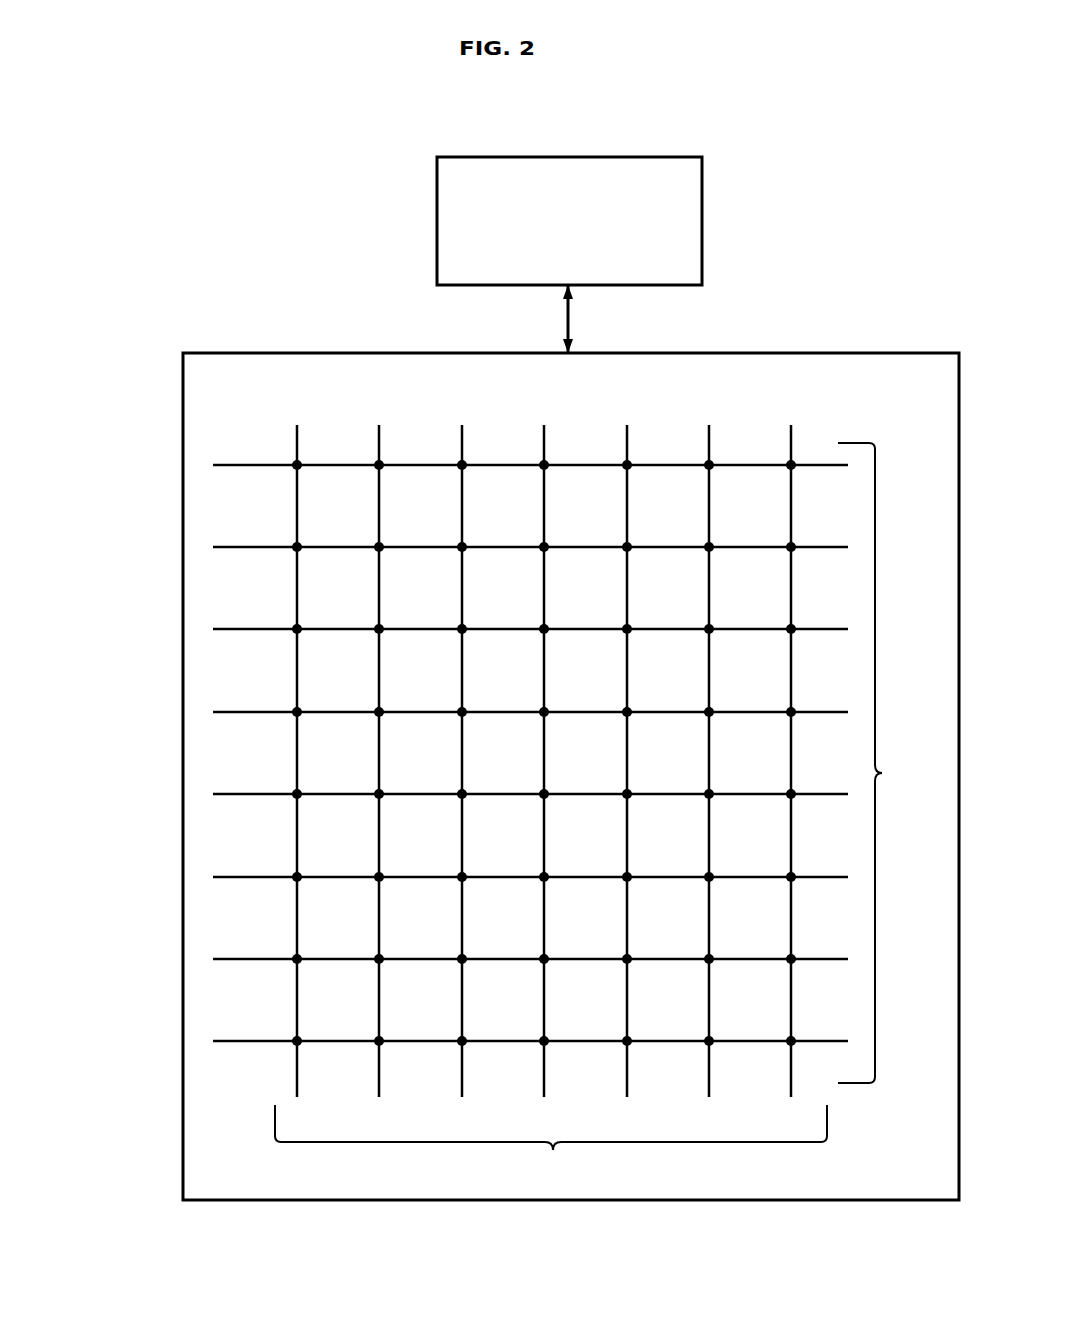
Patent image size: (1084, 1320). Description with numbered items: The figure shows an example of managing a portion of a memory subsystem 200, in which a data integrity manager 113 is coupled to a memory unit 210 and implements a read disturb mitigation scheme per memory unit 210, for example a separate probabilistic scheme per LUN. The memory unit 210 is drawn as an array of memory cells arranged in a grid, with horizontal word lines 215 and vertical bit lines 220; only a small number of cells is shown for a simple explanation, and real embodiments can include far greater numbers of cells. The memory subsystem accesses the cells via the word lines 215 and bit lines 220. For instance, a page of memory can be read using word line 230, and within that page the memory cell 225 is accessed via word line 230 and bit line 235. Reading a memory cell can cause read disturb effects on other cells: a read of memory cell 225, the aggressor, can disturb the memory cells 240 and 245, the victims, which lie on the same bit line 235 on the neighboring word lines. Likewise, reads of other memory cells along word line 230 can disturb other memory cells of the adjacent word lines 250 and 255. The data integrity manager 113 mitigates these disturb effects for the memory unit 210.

The memory subsystem portion 200 is at (813, 167).
The data integrity manager 113 is at (555, 259).
The memory unit 210 is at (625, 385).
The word lines 215 is at (884, 763).
The bit lines 220 is at (551, 1144).
The memory cell 225 is at (378, 543).
The word line 230 is at (215, 547).
The bit line 235 is at (375, 665).
The memory cell 240 is at (379, 460).
The memory cell 245 is at (383, 626).
The word line 250 is at (215, 465).
The word line 255 is at (215, 629).